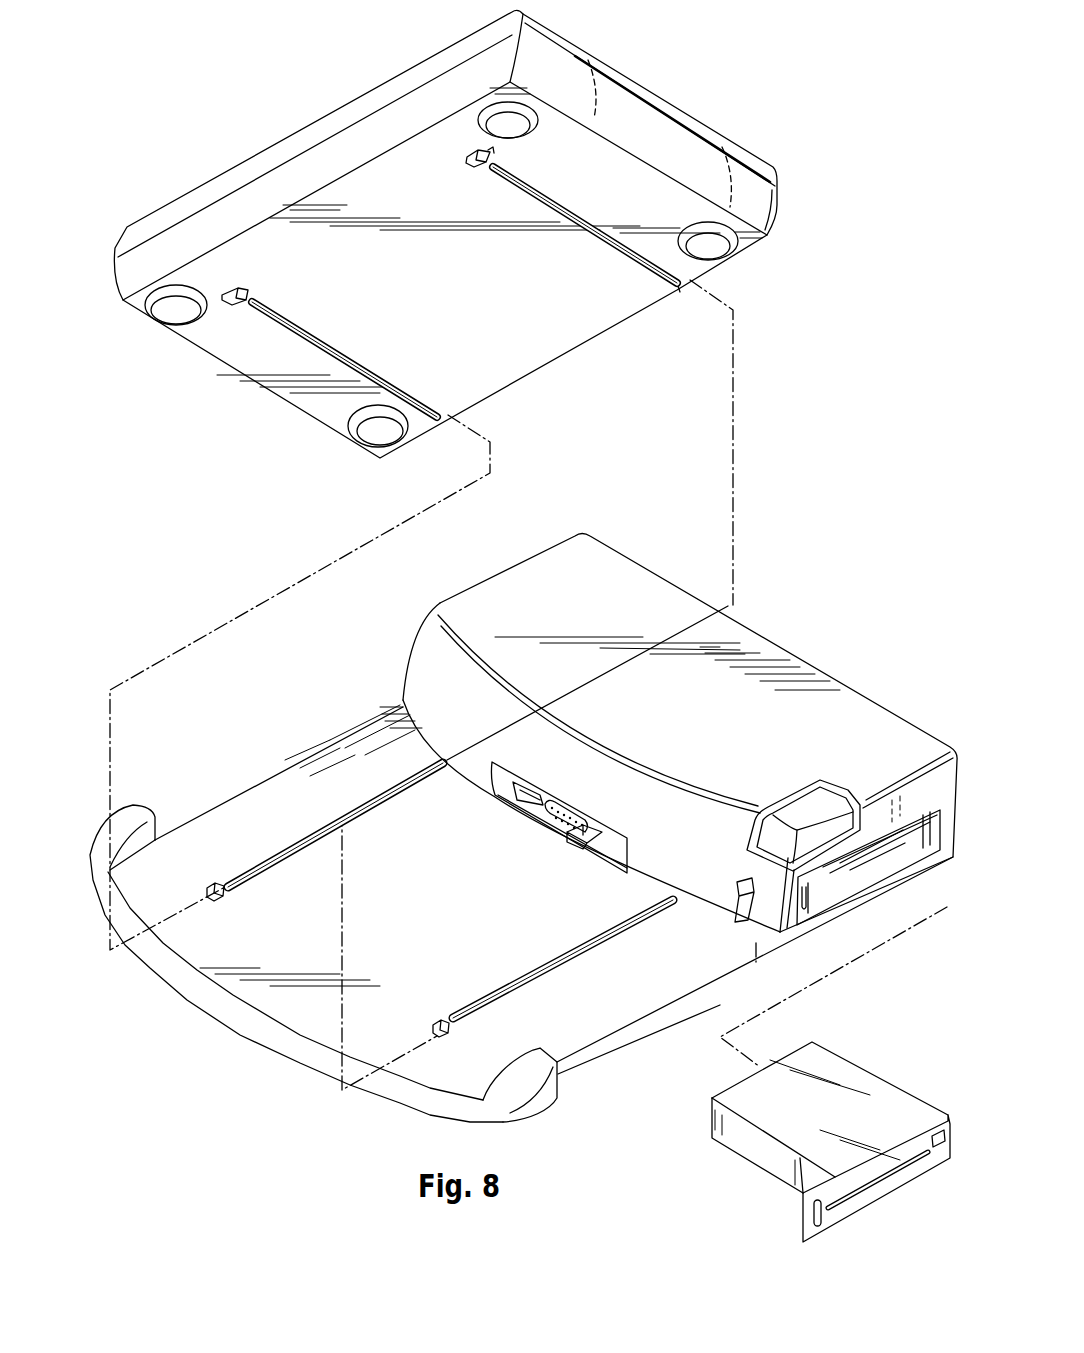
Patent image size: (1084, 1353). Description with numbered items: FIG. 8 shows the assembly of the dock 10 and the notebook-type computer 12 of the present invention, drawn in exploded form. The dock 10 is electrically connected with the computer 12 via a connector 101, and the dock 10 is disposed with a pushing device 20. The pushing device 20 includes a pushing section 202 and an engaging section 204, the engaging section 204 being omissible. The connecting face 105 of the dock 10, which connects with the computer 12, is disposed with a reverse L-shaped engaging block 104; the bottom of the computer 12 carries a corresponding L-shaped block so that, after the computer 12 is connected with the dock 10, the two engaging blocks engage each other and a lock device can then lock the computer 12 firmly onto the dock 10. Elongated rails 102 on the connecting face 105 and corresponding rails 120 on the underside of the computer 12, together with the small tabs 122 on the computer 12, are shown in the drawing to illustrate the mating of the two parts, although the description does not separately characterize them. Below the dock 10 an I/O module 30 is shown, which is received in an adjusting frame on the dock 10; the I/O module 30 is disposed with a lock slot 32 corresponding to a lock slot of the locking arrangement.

The dock 10 is at (668, 733).
The computer 12 is at (445, 234).
The pushing device 20 is at (804, 808).
The I/O module 30 is at (821, 1116).
The lock slot 32 is at (802, 1232).
The connector 101 is at (559, 827).
The guide rails on base 102 is at (393, 792).
The reverse L-shaped engaging block 104 is at (222, 898).
The connecting face 105 is at (297, 990).
The guide rails on lid 120 is at (395, 378).
The latch tabs on lid 122 is at (465, 160).
The pushing section 202 is at (517, 799).
The engaging section 204 is at (577, 848).